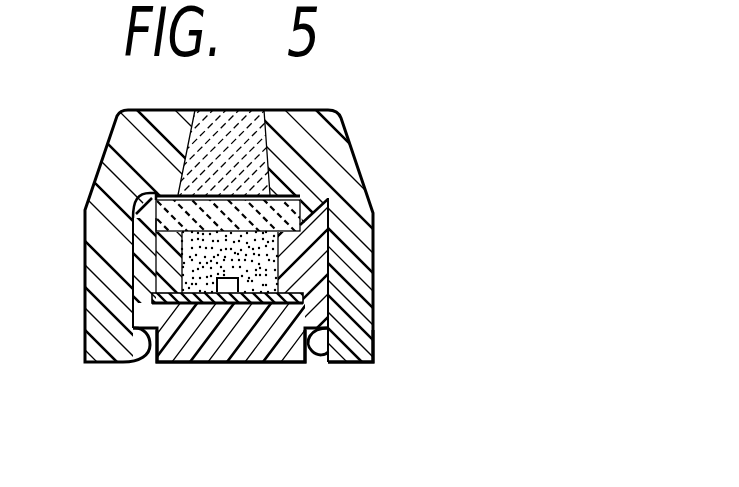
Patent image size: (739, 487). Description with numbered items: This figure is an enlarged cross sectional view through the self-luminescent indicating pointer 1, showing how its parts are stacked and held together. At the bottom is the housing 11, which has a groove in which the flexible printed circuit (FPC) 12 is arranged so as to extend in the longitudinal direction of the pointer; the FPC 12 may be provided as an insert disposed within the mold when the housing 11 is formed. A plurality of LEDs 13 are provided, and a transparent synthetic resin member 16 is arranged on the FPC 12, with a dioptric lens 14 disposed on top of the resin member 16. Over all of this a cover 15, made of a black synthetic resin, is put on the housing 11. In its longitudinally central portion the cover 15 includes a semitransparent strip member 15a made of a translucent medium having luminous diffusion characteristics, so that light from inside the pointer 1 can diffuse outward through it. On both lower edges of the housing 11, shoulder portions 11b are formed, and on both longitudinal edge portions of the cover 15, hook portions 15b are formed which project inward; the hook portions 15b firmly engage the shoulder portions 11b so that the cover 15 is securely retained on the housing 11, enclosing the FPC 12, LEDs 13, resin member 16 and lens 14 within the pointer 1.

The self-luminescent indicating pointer 1 is at (346, 111).
The housing 11 is at (328, 290).
The shoulder portions 11b is at (365, 362).
The flexible printed circuit (FPC) 12 is at (135, 301).
The LEDs 13 is at (330, 303).
The dioptric lens 14 is at (152, 213).
The cover 15 is at (113, 157).
The semitransparent strip member 15a is at (202, 120).
The hook portions 15b is at (136, 342).
The transparent synthetic resin member 16 is at (258, 244).